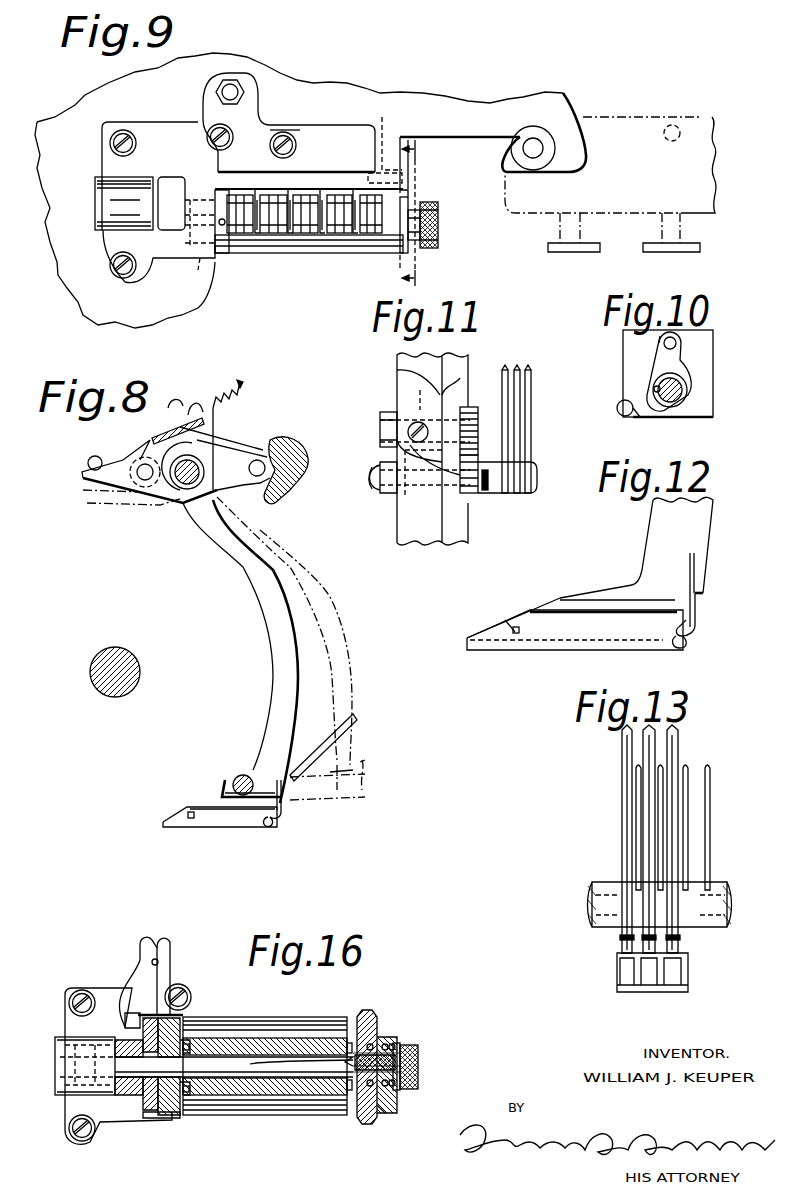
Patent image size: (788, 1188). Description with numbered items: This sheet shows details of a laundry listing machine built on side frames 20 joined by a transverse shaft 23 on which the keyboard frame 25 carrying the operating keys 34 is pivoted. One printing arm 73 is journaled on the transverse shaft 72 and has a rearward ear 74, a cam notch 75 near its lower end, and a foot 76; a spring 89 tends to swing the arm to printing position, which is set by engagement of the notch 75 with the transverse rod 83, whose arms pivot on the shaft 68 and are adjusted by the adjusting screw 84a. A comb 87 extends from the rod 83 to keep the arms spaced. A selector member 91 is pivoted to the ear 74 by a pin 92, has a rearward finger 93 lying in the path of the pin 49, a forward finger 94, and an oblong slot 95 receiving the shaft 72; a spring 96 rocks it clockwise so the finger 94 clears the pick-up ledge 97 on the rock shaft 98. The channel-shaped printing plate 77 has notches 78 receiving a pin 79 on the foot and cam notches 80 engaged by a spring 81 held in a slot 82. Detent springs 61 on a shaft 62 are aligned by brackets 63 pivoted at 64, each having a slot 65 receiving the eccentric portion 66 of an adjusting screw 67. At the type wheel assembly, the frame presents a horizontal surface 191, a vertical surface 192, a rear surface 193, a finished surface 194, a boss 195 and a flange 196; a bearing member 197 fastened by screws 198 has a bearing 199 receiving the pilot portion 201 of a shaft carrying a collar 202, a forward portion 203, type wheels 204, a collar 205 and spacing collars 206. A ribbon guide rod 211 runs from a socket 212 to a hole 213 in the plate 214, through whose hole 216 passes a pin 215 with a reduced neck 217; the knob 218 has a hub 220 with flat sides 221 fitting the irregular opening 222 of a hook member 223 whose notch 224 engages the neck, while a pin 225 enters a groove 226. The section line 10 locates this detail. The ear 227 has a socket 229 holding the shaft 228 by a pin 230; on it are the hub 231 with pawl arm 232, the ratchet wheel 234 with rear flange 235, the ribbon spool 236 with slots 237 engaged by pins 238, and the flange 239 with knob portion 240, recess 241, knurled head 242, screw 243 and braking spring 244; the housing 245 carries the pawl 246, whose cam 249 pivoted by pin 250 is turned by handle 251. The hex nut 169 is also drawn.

In FIG. 9, the section line 10 is at (423, 215).
In FIG. 9, the side frames 20 is at (333, 90).
In FIG. 11, the side frames 20 is at (430, 542).
In FIG. 9, the transverse shaft 23 is at (545, 148).
In FIG. 9, the keyboard frame 25 is at (700, 100).
In FIG. 9, the operating keys 34 is at (662, 250).
In FIG. 8, the pin 49 is at (88, 462).
In FIG. 11, the detent springs 61 is at (517, 370).
In FIG. 11, the transverse shaft 62 is at (530, 495).
In FIG. 11, the adjusting brackets 63 is at (485, 492).
In FIG. 11, the pivot 64 is at (388, 495).
In FIG. 11, the elongated slot 65 is at (480, 455).
In FIG. 11, the eccentric portion 66 is at (480, 428).
In FIG. 11, the adjusting screw 67 is at (380, 420).
In FIG. 8, the shaft 68 is at (128, 655).
In FIG. 8, the transverse shaft 72 is at (200, 462).
In FIG. 12, the printing arms 73 is at (698, 525).
In FIG. 8, the printing arms 73 is at (292, 658).
In FIG. 13, the printing arms 73 is at (672, 738).
In FIG. 8, the ear 74 is at (160, 500).
In FIG. 12, the cam notch 75 is at (618, 585).
In FIG. 8, the cam notch 75 is at (252, 795).
In FIG. 12, the foot 76 is at (568, 598).
In FIG. 8, the foot 76 is at (224, 793).
In FIG. 12, the printing plate 77 is at (588, 632).
In FIG. 8, the printing plate 77 is at (232, 826).
In FIG. 13, the printing plate 77 is at (668, 990).
In FIG. 12, the notches 78 is at (507, 620).
In FIG. 8, the notches 78 is at (183, 822).
In FIG. 12, the pin 79 is at (520, 630).
In FIG. 8, the pin 79 is at (190, 810).
In FIG. 12, the cam notches 80 is at (690, 642).
In FIG. 8, the cam notches 80 is at (263, 822).
In FIG. 12, the spring 81 is at (697, 612).
In FIG. 8, the spring 81 is at (283, 812).
In FIG. 13, the spring 81 is at (650, 944).
In FIG. 12, the slot 82 is at (694, 562).
In FIG. 8, the slot 82 is at (280, 785).
In FIG. 8, the transverse rod 83 is at (247, 776).
In FIG. 13, the transverse rod 83 is at (602, 886).
In FIG. 9, the adjusting screw 84a is at (288, 140).
In FIG. 8, the comb 87 is at (358, 723).
In FIG. 13, the comb 87 is at (660, 780).
In FIG. 8, the springs 89 is at (215, 395).
In FIG. 8, the selector member 91 is at (185, 508).
In FIG. 8, the pin 92 is at (142, 465).
In FIG. 8, the rearwardly extending finger 93 is at (90, 480).
In FIG. 8, the forwardly extending finger 94 is at (258, 460).
In FIG. 8, the oblong slot 95 is at (214, 445).
In FIG. 8, the spring 96 is at (185, 425).
In FIG. 8, the pick-up ledge 97 is at (278, 500).
In FIG. 8, the rock shaft 98 is at (300, 455).
In FIG. 9, the hex nut 169 is at (232, 90).
In FIG. 9, the horizontal surface 191 is at (455, 136).
In FIG. 9, the vertical surface 192 is at (402, 136).
In FIG. 9, the surface 193 is at (292, 196).
In FIG. 9, the finished surface 194 is at (259, 103).
In FIG. 9, the boss 195 is at (103, 255).
In FIG. 9, the laterally extending flange 196 is at (295, 180).
In FIG. 9, the bearing member 197 is at (153, 133).
In FIG. 16, the bearing member 197 is at (70, 1008).
In FIG. 9, the screws 198 is at (110, 143).
In FIG. 16, the screws 198 is at (72, 995).
In FIG. 9, the bearing 199 is at (180, 178).
In FIG. 9, the pilot portion 201 is at (190, 246).
In FIG. 9, the collar 202 is at (408, 210).
In FIG. 10, the forward portion 203 is at (705, 405).
In FIG. 9, the type wheels 204 is at (236, 225).
In FIG. 9, the collar 205 is at (220, 190).
In FIG. 9, the spacing collars 206 is at (280, 198).
In FIG. 9, the rod 211 is at (240, 256).
In FIG. 9, the socket 212 is at (200, 260).
In FIG. 9, the hole 213 is at (412, 258).
In FIG. 10, the hole 213 is at (620, 413).
In FIG. 9, the plate 214 is at (408, 196).
In FIG. 10, the plate 214 is at (705, 353).
In FIG. 9, the pin 215 is at (382, 128).
In FIG. 10, the hole 216 is at (680, 340).
In FIG. 10, the reduced neck portion 217 is at (660, 345).
In FIG. 9, the knob 218 is at (428, 240).
In FIG. 10, the hub 220 is at (680, 408).
In FIG. 10, the flat sides 221 is at (688, 388).
In FIG. 10, the irregular opening 222 is at (690, 375).
In FIG. 9, the hook member 223 is at (438, 220).
In FIG. 10, the hook member 223 is at (660, 360).
In FIG. 10, the notch 224 is at (690, 344).
In FIG. 9, the pin 225 is at (280, 228).
In FIG. 10, the pin 225 is at (654, 389).
In FIG. 9, the groove 226 is at (395, 226).
In FIG. 9, the laterally-extending ear 227 is at (95, 185).
In FIG. 16, the laterally-extending ear 227 is at (60, 1082).
In FIG. 16, the shaft 228 is at (262, 1090).
In FIG. 16, the socket 229 is at (60, 1040).
In FIG. 16, the pin 230 is at (62, 1060).
In FIG. 16, the hub 231 is at (125, 1096).
In FIG. 16, the pawl arm 232 is at (137, 1013).
In FIG. 16, the ratchet wheel 234 is at (157, 1122).
In FIG. 16, the rear flange 235 is at (178, 1124).
In FIG. 16, the ribbon spool 236 is at (257, 1045).
In FIG. 16, the slots 237 is at (190, 1043).
In FIG. 16, the pins 238 is at (186, 1040).
In FIG. 16, the flange 239 is at (374, 1017).
In FIG. 16, the knob portion 240 is at (388, 1037).
In FIG. 16, the countersunk recess 241 is at (400, 1045).
In FIG. 16, the knurled head 242 is at (418, 1054).
In FIG. 16, the screw 243 is at (418, 1073).
In FIG. 16, the spring 244 is at (380, 1098).
In FIG. 16, the housing 245 is at (135, 990).
In FIG. 16, the pawl 246 is at (167, 985).
In FIG. 16, the cam 249 is at (150, 935).
In FIG. 16, the pin 250 is at (167, 945).
In FIG. 16, the operating handle 251 is at (145, 946).